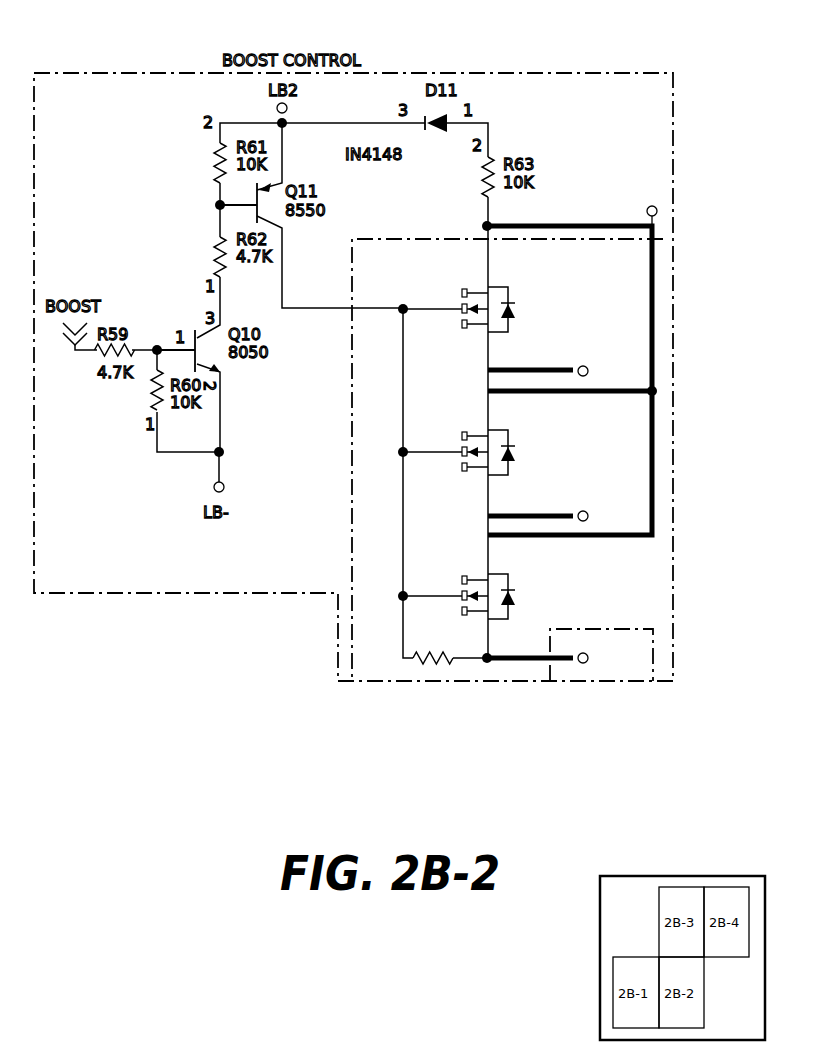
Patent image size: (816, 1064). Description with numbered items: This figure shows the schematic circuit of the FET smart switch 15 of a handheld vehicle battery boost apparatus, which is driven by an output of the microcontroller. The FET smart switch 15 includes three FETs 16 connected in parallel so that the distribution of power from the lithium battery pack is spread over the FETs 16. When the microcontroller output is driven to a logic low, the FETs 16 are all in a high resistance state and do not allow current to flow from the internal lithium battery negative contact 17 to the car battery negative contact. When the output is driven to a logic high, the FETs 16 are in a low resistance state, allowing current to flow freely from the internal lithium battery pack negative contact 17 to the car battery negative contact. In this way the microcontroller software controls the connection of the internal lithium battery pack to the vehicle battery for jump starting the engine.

The FET smart switch 15 is at (155, 72).
The FETs 16 is at (425, 238).
The internal lithium battery negative contact 17 is at (600, 629).